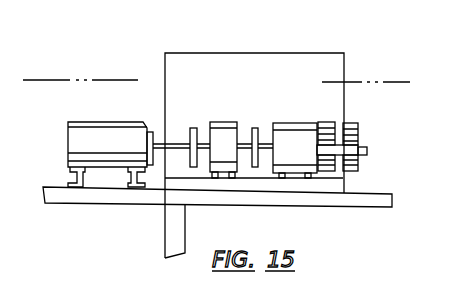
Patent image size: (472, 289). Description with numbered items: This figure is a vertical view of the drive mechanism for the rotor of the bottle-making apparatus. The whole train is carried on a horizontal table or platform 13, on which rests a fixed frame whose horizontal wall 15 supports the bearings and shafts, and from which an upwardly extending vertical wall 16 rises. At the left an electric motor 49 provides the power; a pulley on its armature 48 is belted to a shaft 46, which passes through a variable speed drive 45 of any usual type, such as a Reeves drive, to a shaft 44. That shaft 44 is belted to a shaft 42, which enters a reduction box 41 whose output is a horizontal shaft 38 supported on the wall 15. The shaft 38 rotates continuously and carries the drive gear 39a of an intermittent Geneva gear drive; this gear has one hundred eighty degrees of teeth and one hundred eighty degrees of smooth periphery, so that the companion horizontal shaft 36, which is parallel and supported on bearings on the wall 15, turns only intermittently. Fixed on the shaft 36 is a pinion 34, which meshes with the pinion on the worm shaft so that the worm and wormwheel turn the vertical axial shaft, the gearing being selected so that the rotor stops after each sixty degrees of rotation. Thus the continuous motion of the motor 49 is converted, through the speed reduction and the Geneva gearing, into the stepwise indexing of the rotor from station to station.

The horizontal table or platform 13 is at (388, 198).
The horizontal wall 15 is at (341, 188).
The vertical wall 16 is at (37, 73).
The pinion 34 is at (327, 163).
The horizontal shaft 36 is at (367, 152).
The horizontal shaft 38 is at (332, 143).
The drive gear 39a is at (358, 165).
The reduction box 41 is at (295, 165).
The shaft 42 is at (262, 140).
The shaft 44 is at (250, 140).
The variable speed drive 45 is at (212, 124).
The shaft 46 is at (200, 140).
The armature 48 is at (160, 132).
The electric motor 49 is at (107, 128).